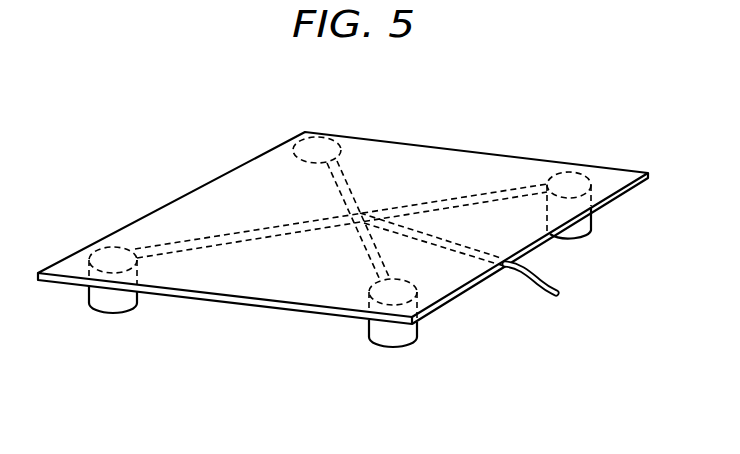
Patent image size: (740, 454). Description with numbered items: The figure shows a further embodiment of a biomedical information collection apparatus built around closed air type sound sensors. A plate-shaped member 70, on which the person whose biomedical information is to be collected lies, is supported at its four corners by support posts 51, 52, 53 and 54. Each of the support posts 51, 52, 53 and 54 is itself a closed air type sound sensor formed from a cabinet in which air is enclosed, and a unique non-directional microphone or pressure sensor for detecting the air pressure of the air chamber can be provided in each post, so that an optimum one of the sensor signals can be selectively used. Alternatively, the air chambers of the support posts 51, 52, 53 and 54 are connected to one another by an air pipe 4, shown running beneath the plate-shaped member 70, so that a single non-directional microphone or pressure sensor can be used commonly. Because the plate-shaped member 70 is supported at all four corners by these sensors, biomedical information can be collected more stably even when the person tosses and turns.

The air pipe 4 is at (507, 304).
The support post 51 is at (105, 310).
The support post 52 is at (387, 341).
The support post 53 is at (586, 233).
The support post 54 is at (329, 143).
The plate-shaped member 70 is at (235, 190).